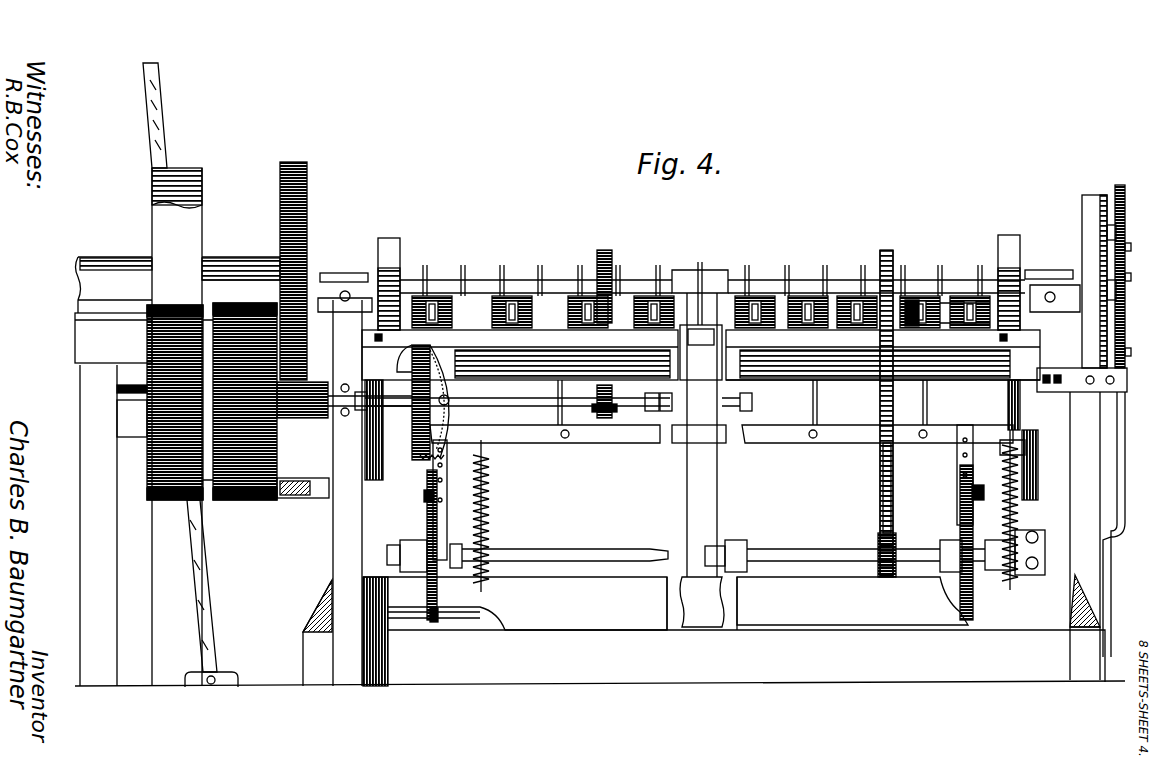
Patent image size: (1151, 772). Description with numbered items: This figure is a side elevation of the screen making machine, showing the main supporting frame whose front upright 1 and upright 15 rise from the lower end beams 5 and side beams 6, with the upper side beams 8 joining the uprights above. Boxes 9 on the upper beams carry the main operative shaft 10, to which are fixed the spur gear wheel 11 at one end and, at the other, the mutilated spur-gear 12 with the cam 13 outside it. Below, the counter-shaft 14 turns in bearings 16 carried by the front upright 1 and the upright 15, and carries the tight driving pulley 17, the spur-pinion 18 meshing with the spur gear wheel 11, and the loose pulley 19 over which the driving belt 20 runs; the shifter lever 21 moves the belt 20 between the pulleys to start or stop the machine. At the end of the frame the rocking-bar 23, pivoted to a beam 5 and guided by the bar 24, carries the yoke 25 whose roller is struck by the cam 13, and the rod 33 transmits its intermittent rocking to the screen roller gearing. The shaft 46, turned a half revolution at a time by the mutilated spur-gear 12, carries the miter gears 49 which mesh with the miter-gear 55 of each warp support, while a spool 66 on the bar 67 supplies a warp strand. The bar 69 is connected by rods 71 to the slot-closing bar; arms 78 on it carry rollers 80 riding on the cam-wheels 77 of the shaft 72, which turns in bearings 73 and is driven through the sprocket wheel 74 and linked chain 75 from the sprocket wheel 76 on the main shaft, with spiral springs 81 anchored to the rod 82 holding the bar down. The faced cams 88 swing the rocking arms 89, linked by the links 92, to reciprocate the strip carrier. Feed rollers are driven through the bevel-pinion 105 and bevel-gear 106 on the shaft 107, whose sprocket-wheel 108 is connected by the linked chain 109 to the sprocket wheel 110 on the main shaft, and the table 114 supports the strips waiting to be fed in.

The front upright 1 is at (333, 552).
The end beam 5 is at (303, 660).
The side beam 6 is at (613, 628).
The side beam 8 is at (786, 373).
The box 9 is at (347, 273).
The main operative shaft 10 is at (800, 278).
The spur gear wheel 11 is at (307, 184).
The mutilated spur-gear 12 is at (1092, 195).
The cam 13 is at (1122, 224).
The counter-shaft 14 is at (330, 420).
The upright 15 is at (80, 552).
The bearing 16 is at (120, 398).
The tight driving pulley 17 is at (250, 500).
The spur-pinion 18 is at (294, 420).
The loose pulley 19 is at (150, 500).
The driving belt 20 is at (172, 500).
The shifter lever 21 is at (163, 118).
The rocking-bar 23 is at (1120, 452).
The bar 24 is at (1102, 392).
The yoke 25 is at (1110, 288).
The rod 33 is at (1110, 232).
The shaft 46 is at (962, 305).
The miter gear 49 is at (912, 298).
The miter-gear 55 is at (955, 340).
The spool 66 is at (855, 292).
The bar 67 is at (520, 354).
The bar 69 is at (615, 443).
The rod 71 is at (558, 416).
The shaft 72 is at (723, 545).
The bearing 73 is at (390, 545).
The sprocket wheel 74 is at (896, 535).
The linked chain 75 is at (893, 492).
The sprocket wheel 76 is at (886, 252).
The cam-wheel 77 is at (427, 512).
The arm 78 is at (957, 468).
The roller 80 is at (424, 493).
The spiral spring 81 is at (489, 487).
The rod 82 is at (470, 620).
The faced cam 88 is at (388, 238).
The rocking arm 89 is at (380, 470).
The link 92 is at (1008, 398).
The bevel-pinion 105 is at (408, 364).
The bevel-gear 106 is at (430, 464).
The shaft 107 is at (558, 396).
The sprocket-wheel 108 is at (612, 410).
The linked chain 109 is at (612, 392).
The sprocket wheel 110 is at (605, 250).
The table 114 is at (75, 340).